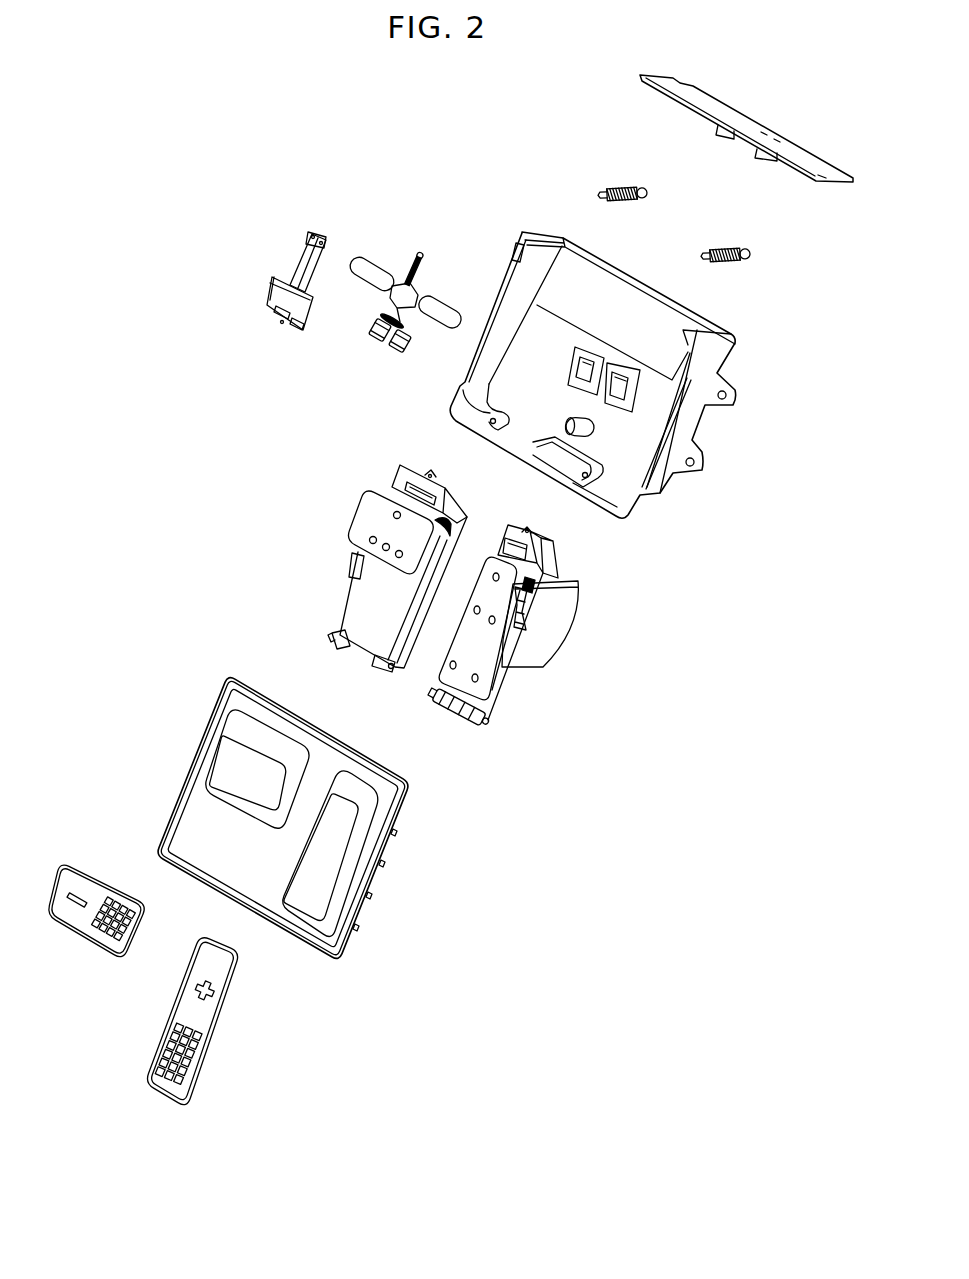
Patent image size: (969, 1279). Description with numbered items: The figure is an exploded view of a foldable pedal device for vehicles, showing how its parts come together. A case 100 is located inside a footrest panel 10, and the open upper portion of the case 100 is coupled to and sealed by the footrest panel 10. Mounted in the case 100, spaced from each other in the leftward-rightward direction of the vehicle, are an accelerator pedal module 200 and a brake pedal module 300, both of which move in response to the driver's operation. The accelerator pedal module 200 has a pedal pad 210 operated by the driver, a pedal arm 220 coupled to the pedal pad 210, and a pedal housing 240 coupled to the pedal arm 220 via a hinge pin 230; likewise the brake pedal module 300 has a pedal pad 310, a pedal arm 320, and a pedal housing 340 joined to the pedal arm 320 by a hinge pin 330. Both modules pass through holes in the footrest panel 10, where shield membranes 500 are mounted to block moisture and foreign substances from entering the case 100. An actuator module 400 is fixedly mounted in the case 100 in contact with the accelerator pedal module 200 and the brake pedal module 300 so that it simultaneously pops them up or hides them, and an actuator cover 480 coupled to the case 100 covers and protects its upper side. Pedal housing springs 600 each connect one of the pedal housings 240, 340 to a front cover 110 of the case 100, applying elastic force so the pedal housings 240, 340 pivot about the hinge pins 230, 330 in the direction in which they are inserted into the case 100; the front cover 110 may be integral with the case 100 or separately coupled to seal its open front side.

The footrest panel 10 is at (292, 818).
The case 100 is at (698, 428).
The front cover 110 is at (737, 122).
The accelerator pedal module 200 is at (540, 655).
The pedal pad 210 is at (203, 1015).
The pedal arm 220 is at (485, 640).
The hinge pin 230 is at (483, 723).
The pedal housing 240 is at (548, 560).
The brake pedal module 300 is at (354, 555).
The pedal pad 310 is at (78, 922).
The pedal arm 320 is at (367, 522).
The hinge pin 330 is at (332, 633).
The pedal housing 340 is at (405, 470).
The actuator module 400 is at (402, 265).
The actuator cover 480 is at (300, 264).
The shield membrane 500 is at (228, 757).
The pedal housing spring 600 is at (610, 188).